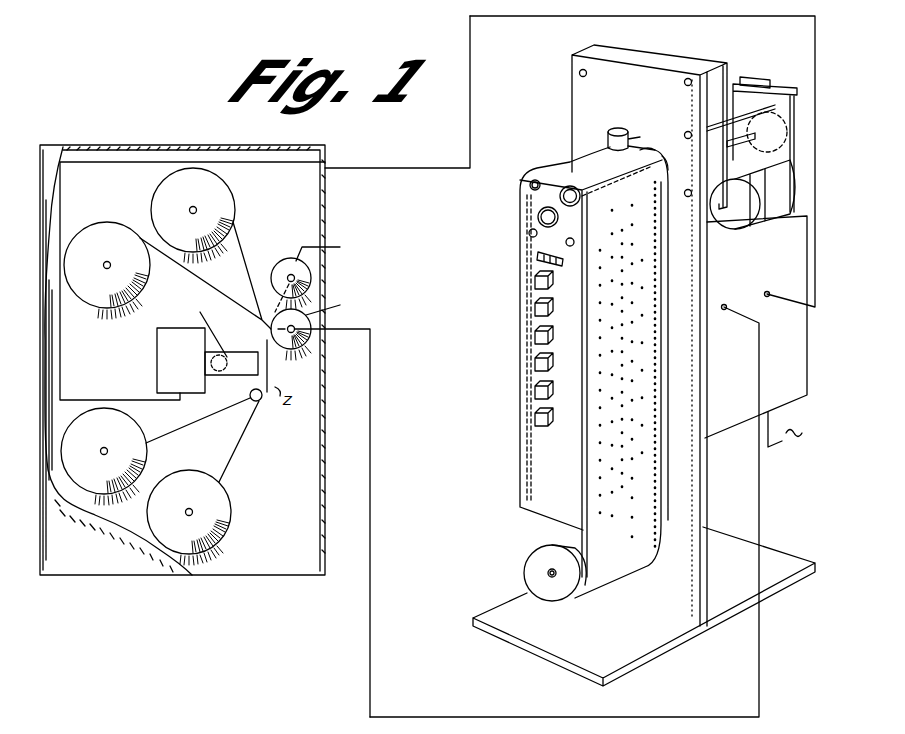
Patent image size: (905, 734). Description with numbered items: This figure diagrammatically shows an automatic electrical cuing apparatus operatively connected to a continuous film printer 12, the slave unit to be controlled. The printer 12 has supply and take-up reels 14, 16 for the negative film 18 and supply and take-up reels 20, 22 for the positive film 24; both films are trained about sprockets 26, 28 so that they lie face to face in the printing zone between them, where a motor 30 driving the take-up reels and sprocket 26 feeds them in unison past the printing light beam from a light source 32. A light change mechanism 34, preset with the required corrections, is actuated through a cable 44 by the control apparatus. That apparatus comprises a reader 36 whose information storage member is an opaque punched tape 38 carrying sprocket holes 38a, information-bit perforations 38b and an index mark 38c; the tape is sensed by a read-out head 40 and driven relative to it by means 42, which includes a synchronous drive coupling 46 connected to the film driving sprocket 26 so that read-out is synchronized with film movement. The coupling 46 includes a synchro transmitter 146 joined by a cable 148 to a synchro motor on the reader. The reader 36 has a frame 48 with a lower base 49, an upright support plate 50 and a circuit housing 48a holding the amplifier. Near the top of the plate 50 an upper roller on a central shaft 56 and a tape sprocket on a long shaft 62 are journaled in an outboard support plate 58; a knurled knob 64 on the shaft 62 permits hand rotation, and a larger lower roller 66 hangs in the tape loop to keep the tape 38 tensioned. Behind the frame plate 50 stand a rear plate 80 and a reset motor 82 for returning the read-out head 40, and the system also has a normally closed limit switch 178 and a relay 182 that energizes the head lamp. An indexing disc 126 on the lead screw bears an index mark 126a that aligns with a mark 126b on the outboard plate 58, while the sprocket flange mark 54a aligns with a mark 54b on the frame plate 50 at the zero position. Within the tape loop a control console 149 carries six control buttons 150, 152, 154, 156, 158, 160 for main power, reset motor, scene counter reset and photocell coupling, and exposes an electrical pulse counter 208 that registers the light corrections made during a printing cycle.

The film printer 12 is at (136, 582).
The supply reel 14 is at (133, 423).
The take-up reel 16 is at (115, 208).
The negative film 18 is at (168, 437).
The supply reel 20 is at (230, 517).
The take-up reel 22 is at (230, 197).
The positive film 24 is at (238, 450).
The sprocket 26 is at (260, 327).
The sprocket 28 is at (248, 393).
The motor 30 is at (285, 262).
The light source 32 is at (210, 362).
The light change mechanism 34 is at (188, 349).
The reader 36 is at (727, 609).
The information storage tape 38 is at (655, 492).
The sprocket holes 38a is at (660, 375).
The perforations 38b is at (607, 387).
The index mark 38c is at (642, 163).
The read-out head 40 is at (600, 137).
The drive means 42 is at (802, 133).
The cable 44 is at (368, 163).
The synchronous drive coupling 46 is at (520, 702).
The frame 48 is at (527, 647).
The circuit housing 48a is at (720, 423).
The lower base 49 is at (642, 650).
The upright support plate 50 is at (702, 572).
The index mark 54a is at (650, 157).
The index mark 54b is at (660, 156).
The central shaft 56 is at (528, 184).
The outboard support plate 58 is at (535, 248).
The sprocket shaft 62 is at (712, 168).
The knurled knob 64 is at (567, 184).
The lower roller 66 is at (535, 557).
The rear plate 80 is at (663, 50).
The reset motor 82 is at (733, 240).
The indexing disc 126 is at (540, 223).
The index mark 126a is at (545, 212).
The index mark 126b is at (560, 203).
The synchro transmitter 146 is at (297, 350).
The electrical cable 148 is at (376, 511).
The control console 149 is at (517, 473).
The control button 150 is at (536, 283).
The reset motor control button 152 is at (536, 309).
The control button 154 is at (536, 337).
The control button 156 is at (535, 358).
The scene counter button 158 is at (535, 383).
The control button 160 is at (535, 410).
The limit switch 178 is at (755, 77).
The relay 182 is at (748, 77).
The pulse counter 208 is at (540, 266).